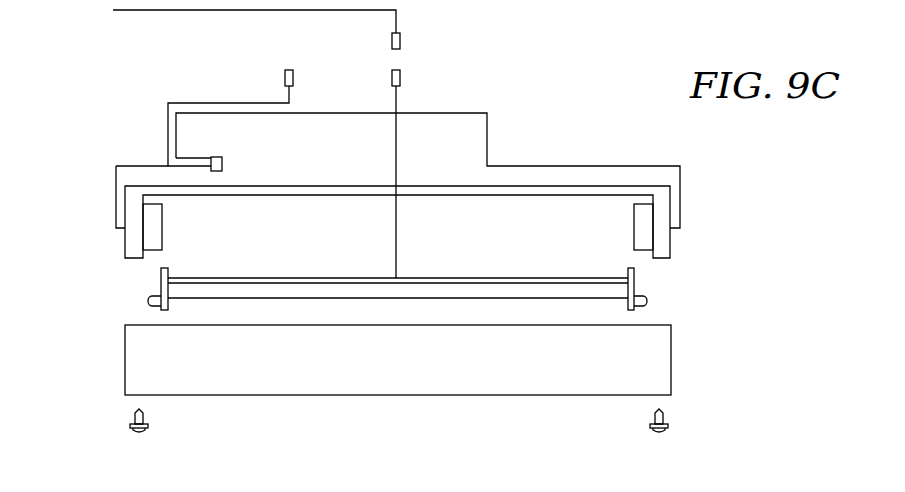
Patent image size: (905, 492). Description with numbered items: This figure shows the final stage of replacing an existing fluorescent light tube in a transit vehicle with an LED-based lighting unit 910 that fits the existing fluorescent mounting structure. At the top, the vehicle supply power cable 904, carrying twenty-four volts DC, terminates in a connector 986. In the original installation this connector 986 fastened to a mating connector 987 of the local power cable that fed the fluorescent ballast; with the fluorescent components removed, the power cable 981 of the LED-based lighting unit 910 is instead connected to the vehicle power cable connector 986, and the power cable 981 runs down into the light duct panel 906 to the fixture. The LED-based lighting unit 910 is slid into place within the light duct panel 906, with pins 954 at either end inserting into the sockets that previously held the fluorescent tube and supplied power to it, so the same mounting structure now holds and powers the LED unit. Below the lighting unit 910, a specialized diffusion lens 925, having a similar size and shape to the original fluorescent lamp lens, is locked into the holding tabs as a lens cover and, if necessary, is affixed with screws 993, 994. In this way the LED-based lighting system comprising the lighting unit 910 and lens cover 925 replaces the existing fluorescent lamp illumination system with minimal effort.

The vehicle supply power cable 904 is at (155, 10).
The connector 986 is at (400, 37).
The mating connector 987 is at (400, 79).
The light duct panel 906 is at (590, 194).
The power cable 981 is at (397, 222).
The LED-based lighting unit 910 is at (551, 278).
The pins 954 is at (150, 300).
The diffusion lens 925 is at (512, 395).
The screw 993 is at (130, 427).
The screw 994 is at (668, 426).